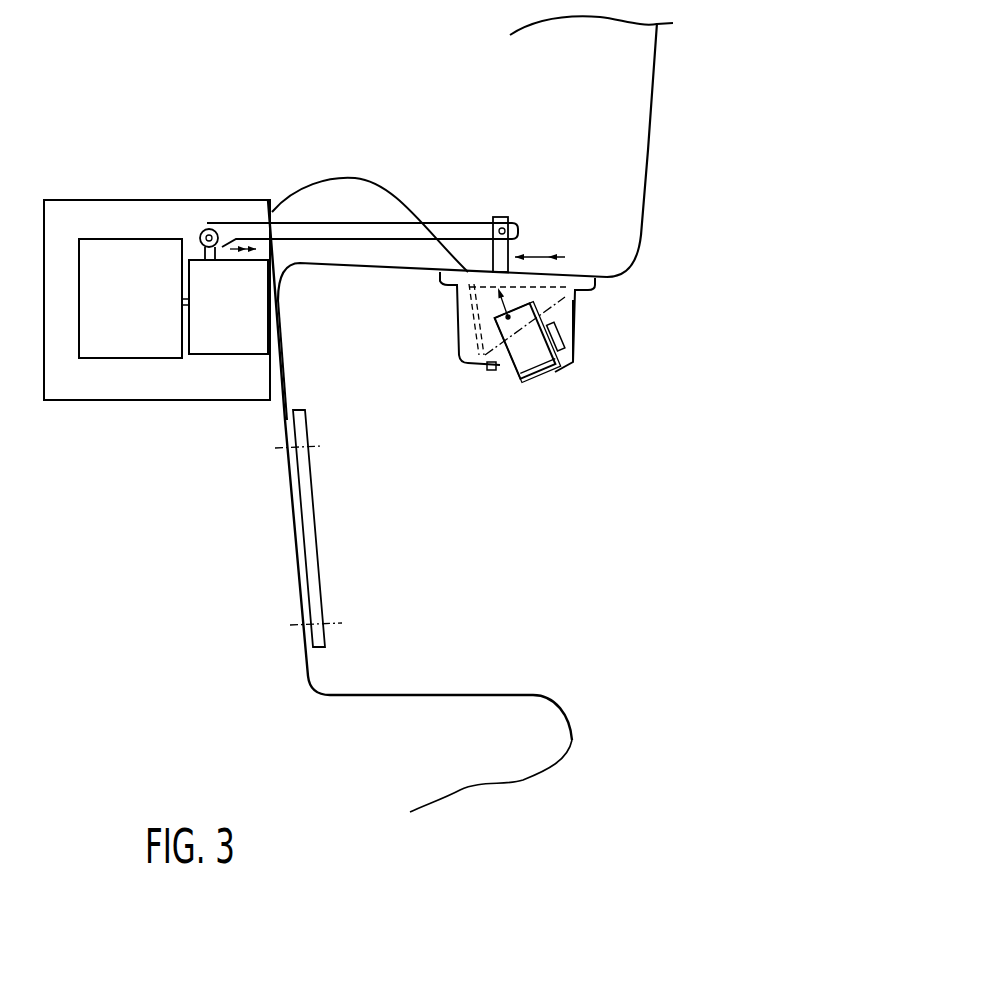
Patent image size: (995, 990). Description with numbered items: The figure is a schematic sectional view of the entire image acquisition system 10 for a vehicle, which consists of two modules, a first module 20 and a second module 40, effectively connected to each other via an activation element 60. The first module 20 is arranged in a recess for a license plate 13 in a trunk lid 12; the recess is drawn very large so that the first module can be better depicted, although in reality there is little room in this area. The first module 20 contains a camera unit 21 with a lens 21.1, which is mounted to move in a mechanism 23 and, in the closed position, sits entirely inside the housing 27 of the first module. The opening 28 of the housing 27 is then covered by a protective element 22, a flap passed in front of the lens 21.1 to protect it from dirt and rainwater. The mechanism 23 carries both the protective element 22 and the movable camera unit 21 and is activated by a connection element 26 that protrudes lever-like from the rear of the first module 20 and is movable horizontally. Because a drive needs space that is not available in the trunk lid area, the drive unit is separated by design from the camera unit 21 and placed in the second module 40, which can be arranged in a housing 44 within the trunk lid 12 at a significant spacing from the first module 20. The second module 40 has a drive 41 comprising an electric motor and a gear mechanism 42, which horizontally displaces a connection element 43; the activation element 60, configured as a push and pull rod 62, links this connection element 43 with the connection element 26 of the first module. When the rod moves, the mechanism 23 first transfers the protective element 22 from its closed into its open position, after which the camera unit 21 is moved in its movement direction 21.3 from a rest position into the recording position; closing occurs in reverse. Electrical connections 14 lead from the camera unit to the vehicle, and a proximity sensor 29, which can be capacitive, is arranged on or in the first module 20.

The image acquisition system 10 is at (172, 156).
The trunk lid 12 is at (573, 128).
The license plate 13 is at (310, 530).
The electrical connections 14 is at (353, 176).
The first module 20 is at (393, 382).
The camera unit 21 is at (516, 357).
The lens 21.1 is at (540, 378).
The movement direction 21.3 is at (458, 315).
The protective element 22 is at (470, 337).
The mechanism 23 is at (548, 297).
The connection element 26 is at (506, 251).
The housing 27 is at (575, 321).
The opening 28 is at (496, 372).
The proximity sensor 29 is at (570, 341).
The second module 40 is at (157, 298).
The drive 41 is at (112, 295).
The gear mechanism 42 is at (217, 316).
The connection element 43 is at (216, 232).
The housing 44 is at (146, 401).
The activation element 60 is at (362, 193).
The push and pull rod 62 is at (442, 230).